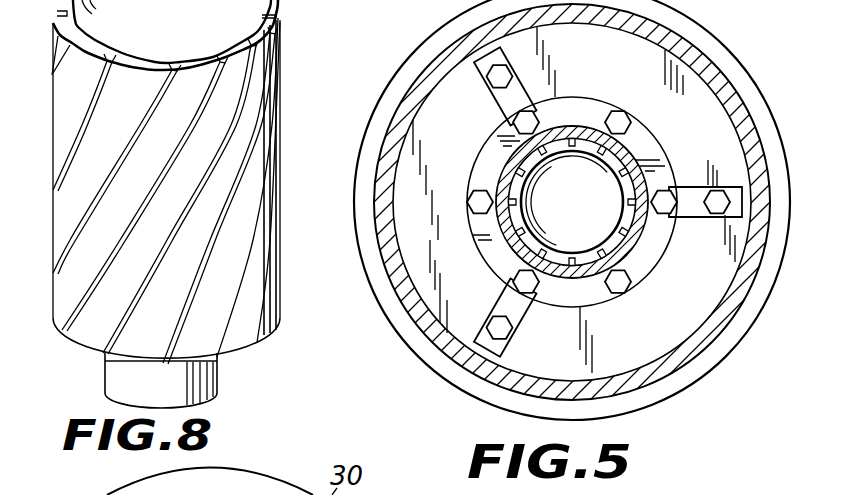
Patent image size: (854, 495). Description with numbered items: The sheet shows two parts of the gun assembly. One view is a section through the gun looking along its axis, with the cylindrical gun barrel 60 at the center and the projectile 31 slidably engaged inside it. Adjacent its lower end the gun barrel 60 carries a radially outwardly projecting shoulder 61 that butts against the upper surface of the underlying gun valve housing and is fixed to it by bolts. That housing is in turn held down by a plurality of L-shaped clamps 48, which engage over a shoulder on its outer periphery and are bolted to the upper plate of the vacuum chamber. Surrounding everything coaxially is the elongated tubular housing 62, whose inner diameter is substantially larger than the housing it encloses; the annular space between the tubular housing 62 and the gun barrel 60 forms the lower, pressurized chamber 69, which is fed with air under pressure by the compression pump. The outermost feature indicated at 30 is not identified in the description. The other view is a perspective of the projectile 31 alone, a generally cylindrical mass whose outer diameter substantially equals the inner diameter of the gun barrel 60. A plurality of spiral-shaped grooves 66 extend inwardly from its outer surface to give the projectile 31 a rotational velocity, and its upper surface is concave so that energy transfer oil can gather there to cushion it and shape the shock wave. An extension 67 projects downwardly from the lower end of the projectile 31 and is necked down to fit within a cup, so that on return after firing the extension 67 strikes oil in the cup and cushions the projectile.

In FIG. 5, the housing ring 30 is at (432, 348).
In FIG. 8, the projectile 31 is at (277, 33).
In FIG. 5, the projectile 31 is at (581, 207).
In FIG. 5, the L-shaped clamps 48 is at (503, 305).
In FIG. 5, the gun barrel 60 is at (628, 158).
In FIG. 5, the shoulder 61 is at (662, 155).
In FIG. 5, the tubular housing 62 is at (718, 330).
In FIG. 8, the spiral-shaped grooves 66 is at (113, 163).
In FIG. 5, the spiral-shaped grooves 66 is at (607, 251).
In FIG. 8, the extension 67 is at (117, 376).
In FIG. 5, the pressurized chamber 69 is at (663, 333).